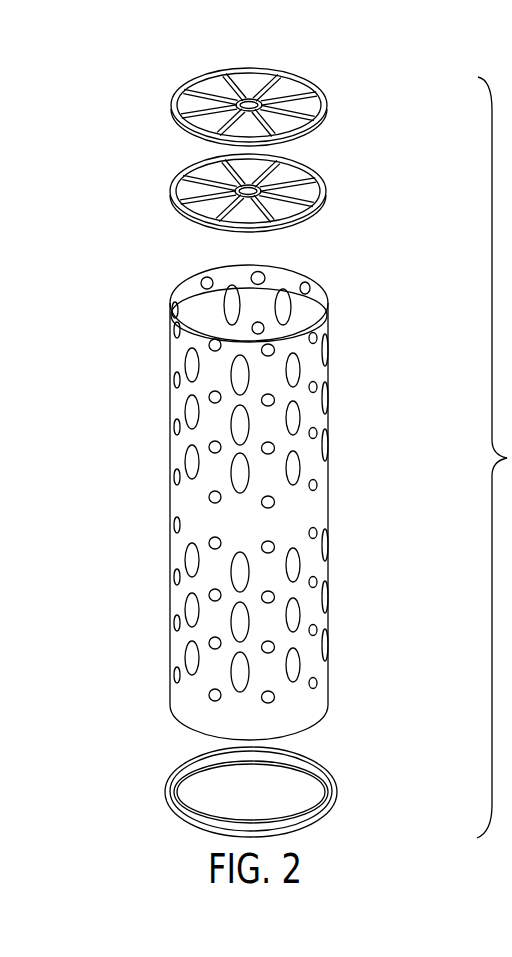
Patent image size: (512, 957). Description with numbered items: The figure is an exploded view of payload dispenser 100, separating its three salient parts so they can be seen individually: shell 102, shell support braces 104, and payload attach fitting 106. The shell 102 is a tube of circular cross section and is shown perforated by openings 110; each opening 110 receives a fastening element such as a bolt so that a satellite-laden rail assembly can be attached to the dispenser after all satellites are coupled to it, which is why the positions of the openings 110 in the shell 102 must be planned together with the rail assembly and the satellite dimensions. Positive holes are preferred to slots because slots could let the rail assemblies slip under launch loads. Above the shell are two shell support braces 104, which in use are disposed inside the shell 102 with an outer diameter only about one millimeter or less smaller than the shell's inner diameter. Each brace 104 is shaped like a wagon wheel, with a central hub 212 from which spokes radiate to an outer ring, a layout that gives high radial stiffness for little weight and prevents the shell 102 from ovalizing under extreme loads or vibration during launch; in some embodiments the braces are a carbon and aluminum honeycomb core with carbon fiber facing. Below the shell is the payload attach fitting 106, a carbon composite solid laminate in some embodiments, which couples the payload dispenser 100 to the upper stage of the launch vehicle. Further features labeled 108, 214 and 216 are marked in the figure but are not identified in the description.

The payload dispenser 100 is at (404, 114).
The shell 102 is at (188, 507).
The shell support braces 104 is at (329, 167).
The payload attach fitting 106 is at (172, 800).
The elongated perforation 108 is at (187, 412).
The openings 110 is at (175, 379).
The hub 212 is at (172, 192).
The outer rim 214 is at (166, 214).
The spoke 216 is at (280, 222).